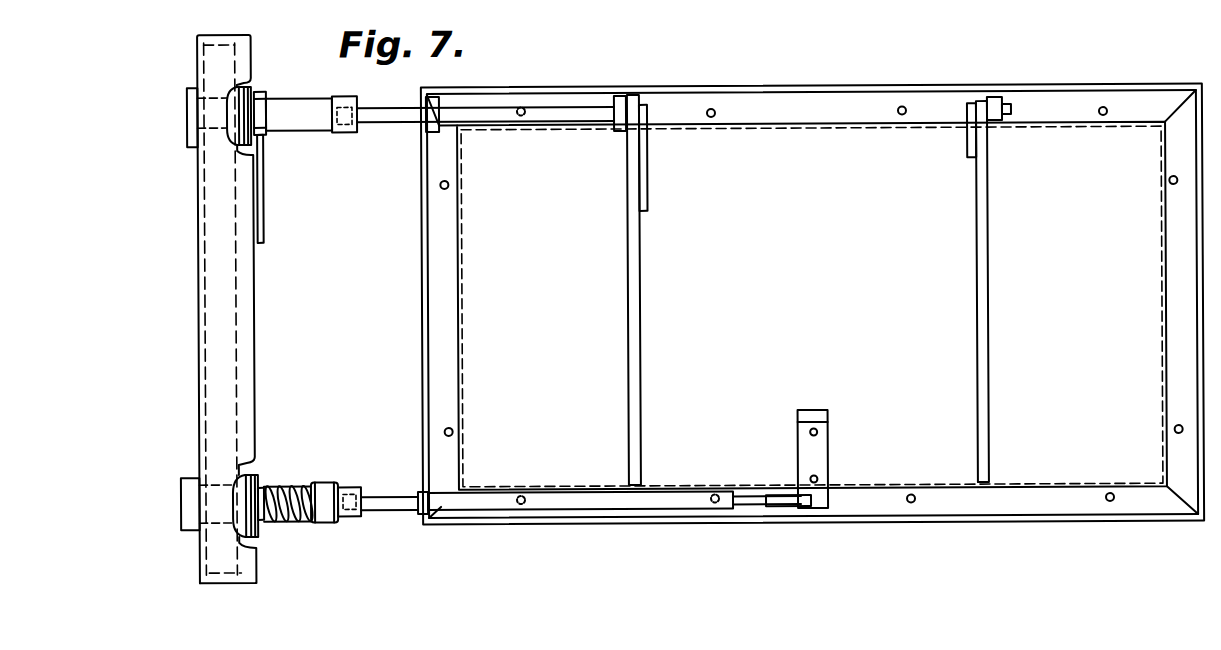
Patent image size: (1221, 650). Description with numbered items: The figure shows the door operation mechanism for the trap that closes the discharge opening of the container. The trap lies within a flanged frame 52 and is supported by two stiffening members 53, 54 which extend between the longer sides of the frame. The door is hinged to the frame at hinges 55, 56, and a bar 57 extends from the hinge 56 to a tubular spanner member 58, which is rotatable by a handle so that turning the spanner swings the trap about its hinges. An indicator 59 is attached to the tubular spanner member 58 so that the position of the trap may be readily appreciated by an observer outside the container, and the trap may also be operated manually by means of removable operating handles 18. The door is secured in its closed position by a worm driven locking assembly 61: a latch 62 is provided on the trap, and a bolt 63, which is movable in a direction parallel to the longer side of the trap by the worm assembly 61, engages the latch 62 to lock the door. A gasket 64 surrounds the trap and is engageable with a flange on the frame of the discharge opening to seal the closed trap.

The removable operating handles 18 is at (205, 114).
The flanged frame 52 is at (1198, 231).
The stiffening member 53 is at (989, 268).
The stiffening member 54 is at (641, 278).
The hinge 55 is at (997, 98).
The hinge 56 is at (640, 100).
The bar 57 is at (388, 115).
The tubular spanner member 58 is at (283, 99).
The indicator 59 is at (266, 218).
The worm driven locking assembly 61 is at (325, 486).
The latch 62 is at (819, 443).
The bolt 63 is at (806, 496).
The gasket 64 is at (800, 125).